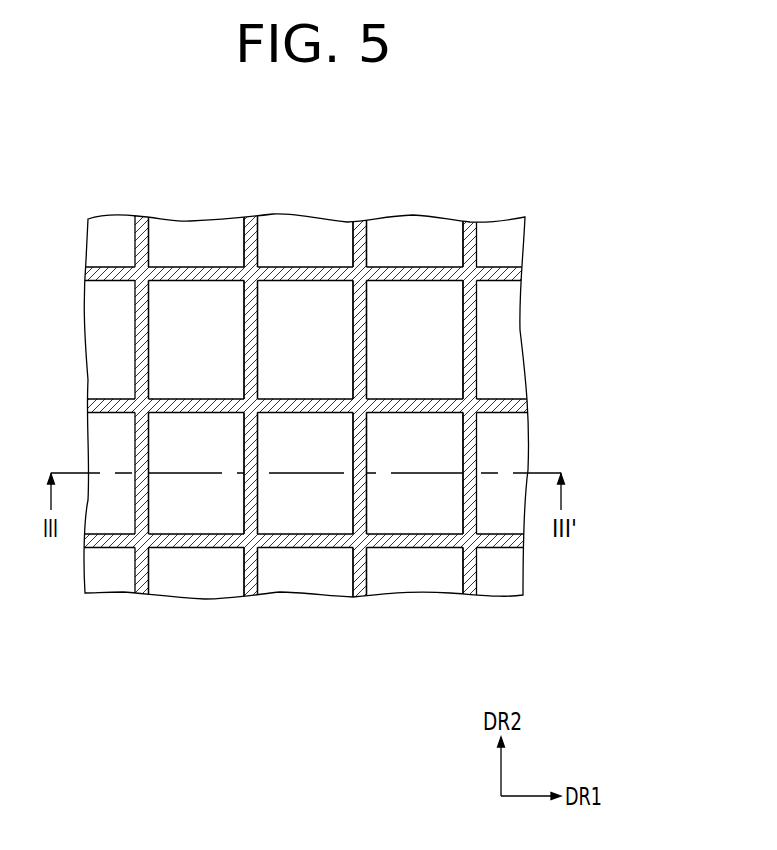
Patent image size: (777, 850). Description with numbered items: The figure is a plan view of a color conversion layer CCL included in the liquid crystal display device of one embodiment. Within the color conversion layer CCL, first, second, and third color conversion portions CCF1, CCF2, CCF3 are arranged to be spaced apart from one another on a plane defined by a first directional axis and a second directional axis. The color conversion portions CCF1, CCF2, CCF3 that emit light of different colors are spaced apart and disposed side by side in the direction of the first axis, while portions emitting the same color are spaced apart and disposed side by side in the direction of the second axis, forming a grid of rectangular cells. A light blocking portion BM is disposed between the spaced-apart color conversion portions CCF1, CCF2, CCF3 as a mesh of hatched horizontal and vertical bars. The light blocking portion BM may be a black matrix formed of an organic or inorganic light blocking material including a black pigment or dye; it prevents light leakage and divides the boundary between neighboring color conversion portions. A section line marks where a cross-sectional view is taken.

The color conversion layer CCL is at (305, 388).
The light blocking portion BM is at (360, 597).
The first color conversion portion CCF1 is at (198, 527).
The second color conversion portion CCF2 is at (308, 527).
The third color conversion portion CCF3 is at (424, 525).